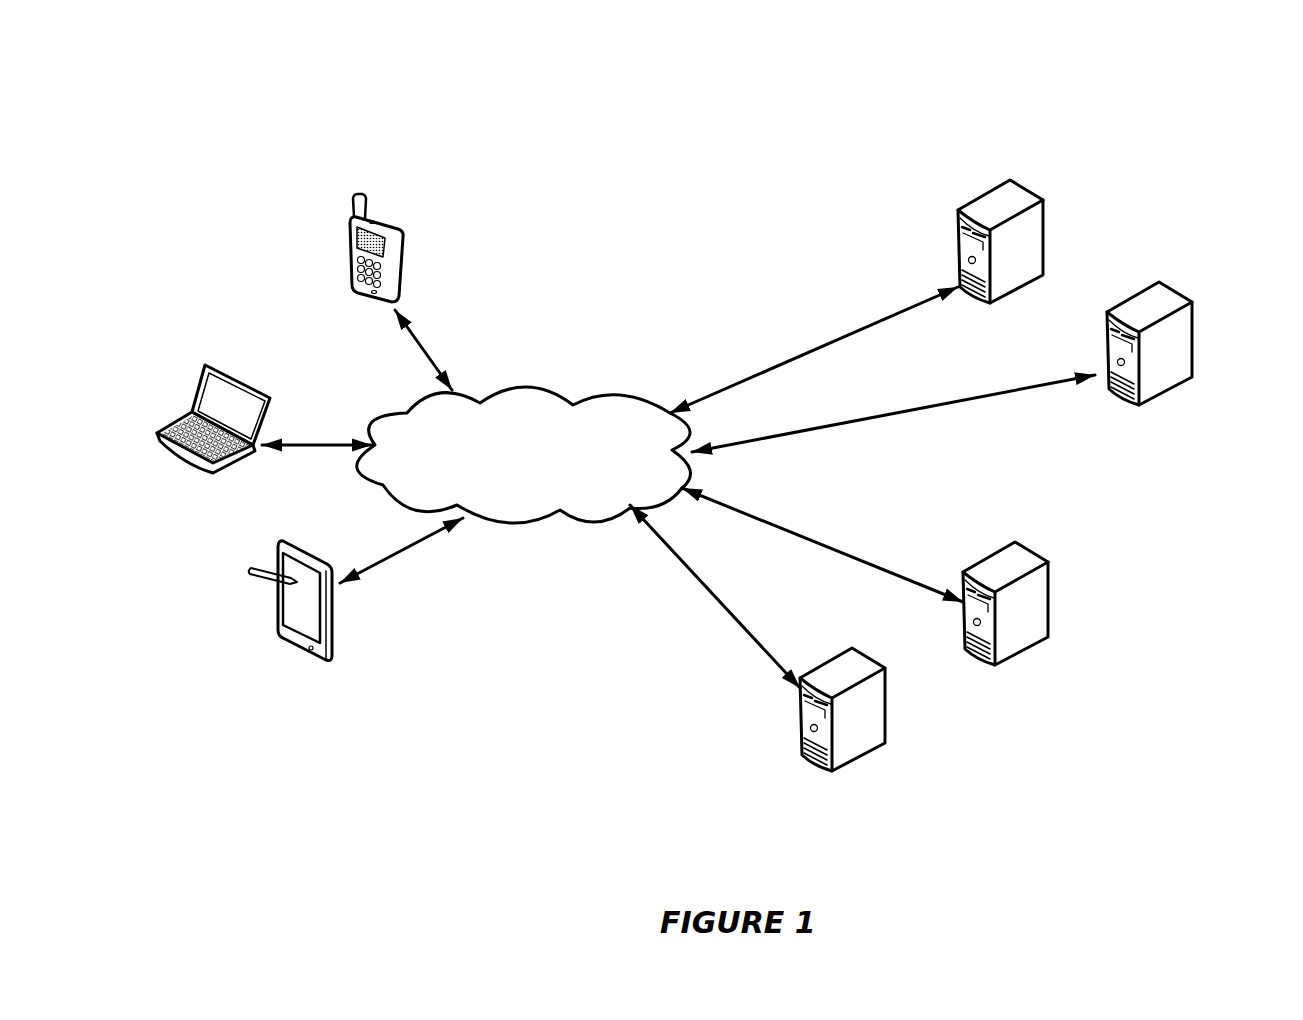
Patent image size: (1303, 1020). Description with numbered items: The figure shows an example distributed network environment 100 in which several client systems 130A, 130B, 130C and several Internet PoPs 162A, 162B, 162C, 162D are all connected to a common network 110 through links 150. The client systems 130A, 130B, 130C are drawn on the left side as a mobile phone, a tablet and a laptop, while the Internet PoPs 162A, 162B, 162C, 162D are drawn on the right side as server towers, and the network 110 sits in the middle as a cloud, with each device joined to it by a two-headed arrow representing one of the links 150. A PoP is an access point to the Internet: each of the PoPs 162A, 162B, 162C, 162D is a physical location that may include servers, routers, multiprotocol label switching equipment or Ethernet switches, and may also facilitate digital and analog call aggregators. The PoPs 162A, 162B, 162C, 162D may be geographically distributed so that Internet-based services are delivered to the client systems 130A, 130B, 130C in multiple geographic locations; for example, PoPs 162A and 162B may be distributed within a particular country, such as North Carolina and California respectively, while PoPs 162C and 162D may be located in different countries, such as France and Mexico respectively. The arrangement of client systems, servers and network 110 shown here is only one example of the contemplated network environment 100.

The network environment 100 is at (740, 36).
The network 110 is at (543, 480).
The client system 130A is at (347, 262).
The client system 130B is at (278, 610).
The client system 130C is at (157, 432).
The links 150 is at (398, 558).
The Internet PoP 162A is at (1173, 372).
The Internet PoP 162B is at (877, 722).
The Internet PoP 162C is at (1027, 245).
The Internet PoP 162D is at (1038, 612).